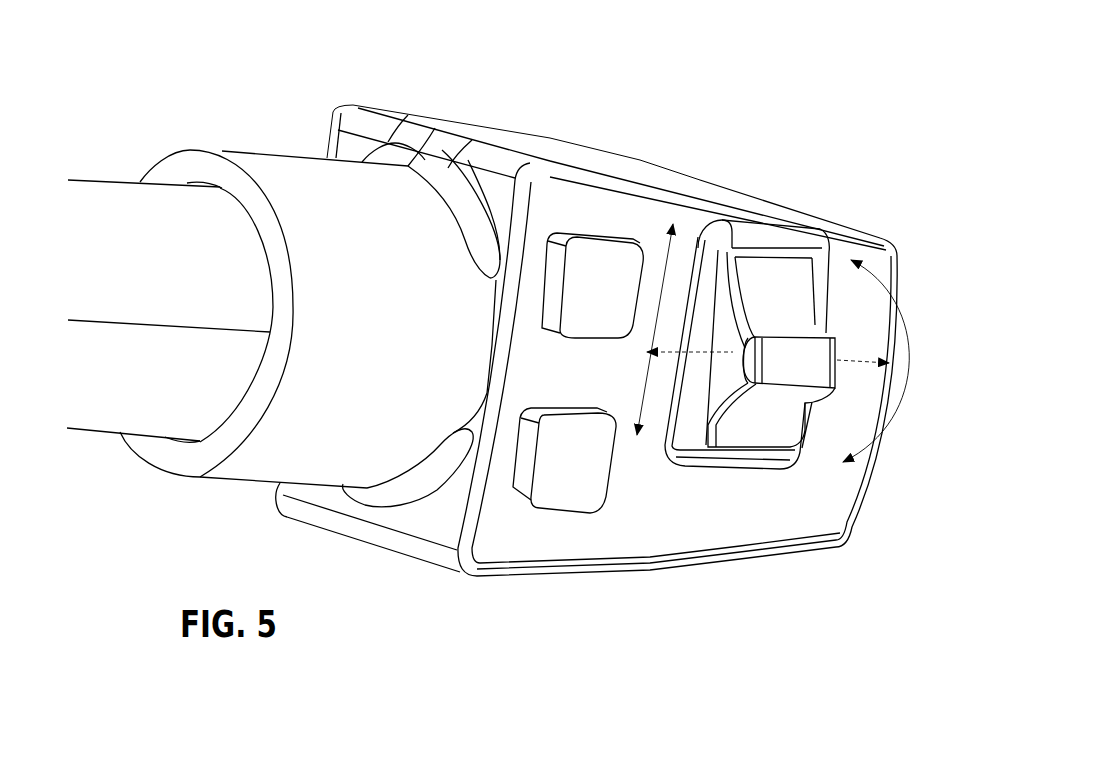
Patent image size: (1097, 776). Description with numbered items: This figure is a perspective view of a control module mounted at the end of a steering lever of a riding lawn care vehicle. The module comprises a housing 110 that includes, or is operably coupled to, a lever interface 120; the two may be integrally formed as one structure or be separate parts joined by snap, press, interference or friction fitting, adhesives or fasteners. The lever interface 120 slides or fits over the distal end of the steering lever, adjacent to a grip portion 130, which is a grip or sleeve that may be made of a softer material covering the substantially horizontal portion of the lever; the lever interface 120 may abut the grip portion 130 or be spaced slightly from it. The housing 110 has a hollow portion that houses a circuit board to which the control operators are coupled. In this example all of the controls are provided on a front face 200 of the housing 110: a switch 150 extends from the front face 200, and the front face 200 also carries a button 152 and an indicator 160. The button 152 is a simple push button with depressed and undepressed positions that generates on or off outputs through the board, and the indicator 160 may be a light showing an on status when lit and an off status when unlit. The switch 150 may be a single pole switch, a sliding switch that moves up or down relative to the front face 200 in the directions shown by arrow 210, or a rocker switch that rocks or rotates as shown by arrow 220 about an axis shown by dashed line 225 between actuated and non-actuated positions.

The housing 110 is at (520, 142).
The lever interface 120 is at (270, 178).
The grip portion 130 is at (100, 383).
The switch 150 is at (782, 268).
The button 152 is at (602, 260).
The indicator 160 is at (565, 475).
The front face 200 is at (647, 518).
The arrow 210 is at (673, 243).
The arrow 220 is at (887, 430).
The dashed line 225 is at (690, 352).